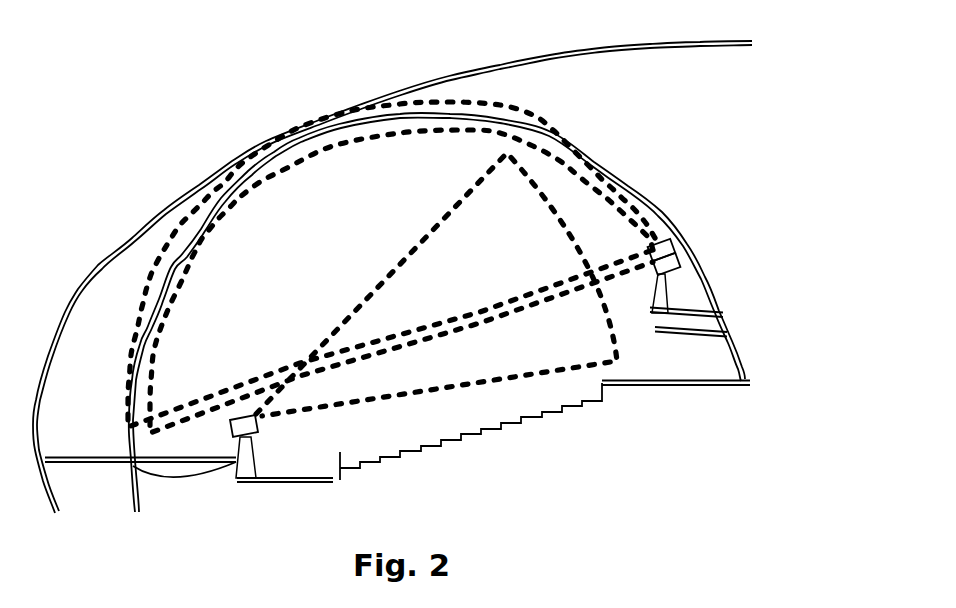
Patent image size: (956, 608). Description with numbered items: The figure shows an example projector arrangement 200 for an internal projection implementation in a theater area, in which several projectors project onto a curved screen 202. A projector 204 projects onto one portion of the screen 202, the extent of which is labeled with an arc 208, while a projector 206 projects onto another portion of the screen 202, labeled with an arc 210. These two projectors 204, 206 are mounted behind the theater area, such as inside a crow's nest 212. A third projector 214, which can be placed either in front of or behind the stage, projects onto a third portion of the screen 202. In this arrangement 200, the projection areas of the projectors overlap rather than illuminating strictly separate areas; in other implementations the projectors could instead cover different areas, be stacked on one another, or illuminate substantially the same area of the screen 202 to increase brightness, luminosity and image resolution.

The projector arrangement 200 is at (232, 58).
The screen 202 is at (553, 128).
The projector 204 is at (700, 270).
The projector 206 is at (697, 231).
The arc 208 is at (287, 165).
The arc 210 is at (345, 114).
The crow's nest 212 is at (705, 332).
The projector 214 is at (234, 493).